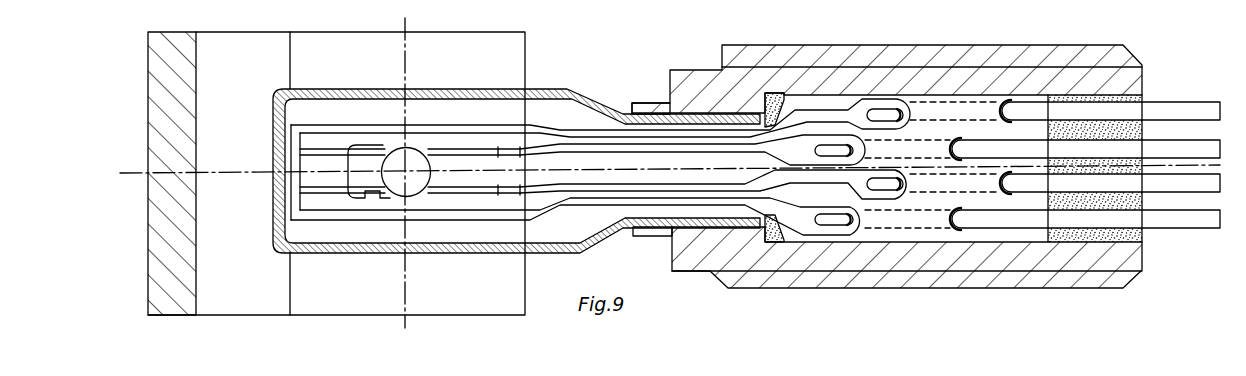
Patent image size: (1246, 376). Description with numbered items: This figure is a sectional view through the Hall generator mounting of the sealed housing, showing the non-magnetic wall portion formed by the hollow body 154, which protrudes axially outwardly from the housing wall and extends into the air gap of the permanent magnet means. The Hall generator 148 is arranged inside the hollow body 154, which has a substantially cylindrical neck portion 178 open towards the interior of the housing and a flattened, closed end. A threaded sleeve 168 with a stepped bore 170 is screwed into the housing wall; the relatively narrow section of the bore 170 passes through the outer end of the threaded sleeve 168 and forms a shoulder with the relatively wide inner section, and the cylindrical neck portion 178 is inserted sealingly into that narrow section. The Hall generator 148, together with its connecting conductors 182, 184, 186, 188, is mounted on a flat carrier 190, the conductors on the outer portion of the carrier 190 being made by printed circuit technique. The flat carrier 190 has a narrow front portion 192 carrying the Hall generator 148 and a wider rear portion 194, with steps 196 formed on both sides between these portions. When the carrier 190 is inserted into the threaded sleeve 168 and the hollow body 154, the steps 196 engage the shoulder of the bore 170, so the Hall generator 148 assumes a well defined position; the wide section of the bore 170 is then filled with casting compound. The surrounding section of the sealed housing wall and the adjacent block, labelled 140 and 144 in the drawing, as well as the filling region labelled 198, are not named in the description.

The wall 140 is at (178, 310).
The support block 144 is at (468, 310).
The Hall generator 148 is at (410, 150).
The hollow body 154 is at (580, 74).
The threaded sleeve 168 is at (892, 83).
The stepped bore 170 is at (830, 83).
The cylindrical neck portion 178 is at (660, 238).
The connecting conductor 182 is at (1146, 111).
The connecting conductor 184 is at (1178, 148).
The connecting conductor 186 is at (1153, 183).
The connecting conductor 188 is at (1195, 218).
The flat carrier 190 is at (795, 96).
The narrow front portion 192 is at (538, 212).
The wider rear portion 194 is at (923, 235).
The steps 196 is at (756, 243).
The potting compound 198 is at (1110, 242).